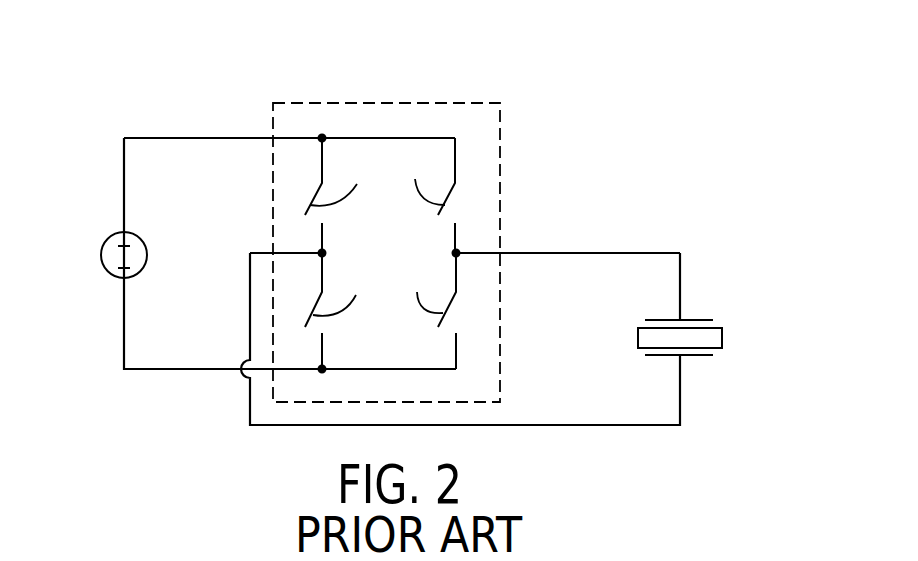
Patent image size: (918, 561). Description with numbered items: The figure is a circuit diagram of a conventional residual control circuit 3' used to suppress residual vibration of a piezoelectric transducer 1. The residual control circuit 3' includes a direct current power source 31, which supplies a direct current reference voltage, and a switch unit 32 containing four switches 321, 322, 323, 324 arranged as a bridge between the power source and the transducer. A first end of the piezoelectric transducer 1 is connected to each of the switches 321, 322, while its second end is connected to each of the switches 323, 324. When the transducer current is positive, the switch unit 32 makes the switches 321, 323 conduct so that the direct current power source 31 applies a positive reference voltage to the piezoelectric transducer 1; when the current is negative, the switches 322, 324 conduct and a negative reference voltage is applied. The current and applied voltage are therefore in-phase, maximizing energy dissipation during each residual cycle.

The piezoelectric transducer 1 is at (693, 318).
The direct current power source 31 is at (103, 268).
The switch unit 32 is at (500, 160).
The conventional residual control circuit 3' is at (408, 208).
The switch 321 is at (424, 195).
The switch 322 is at (429, 310).
The switch 323 is at (339, 311).
The switch 324 is at (339, 194).